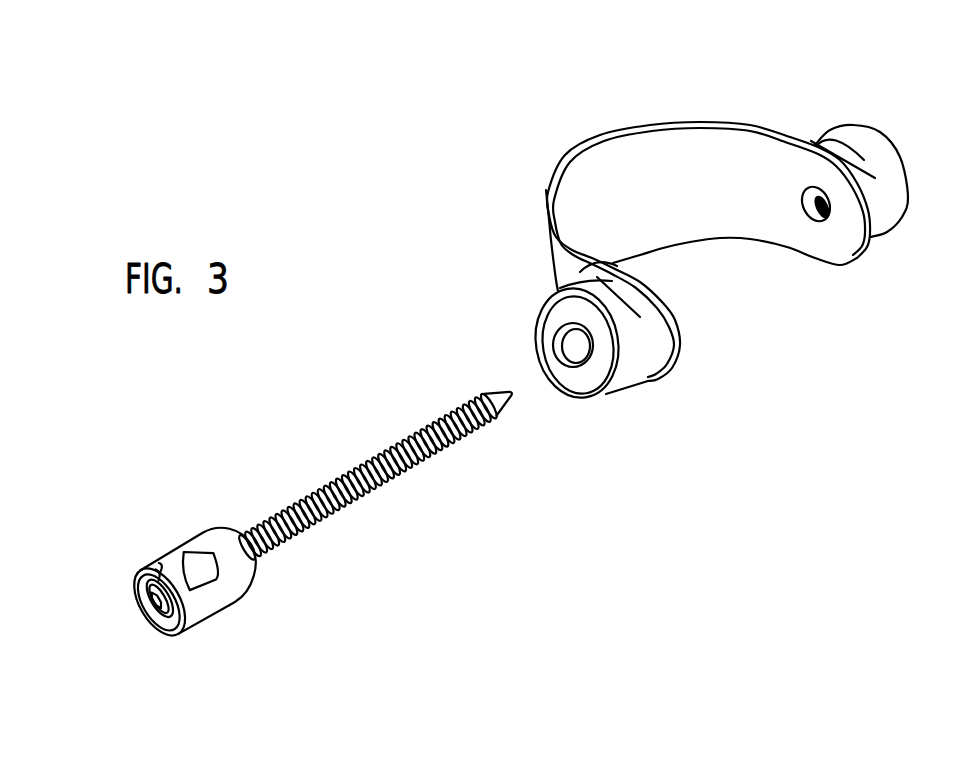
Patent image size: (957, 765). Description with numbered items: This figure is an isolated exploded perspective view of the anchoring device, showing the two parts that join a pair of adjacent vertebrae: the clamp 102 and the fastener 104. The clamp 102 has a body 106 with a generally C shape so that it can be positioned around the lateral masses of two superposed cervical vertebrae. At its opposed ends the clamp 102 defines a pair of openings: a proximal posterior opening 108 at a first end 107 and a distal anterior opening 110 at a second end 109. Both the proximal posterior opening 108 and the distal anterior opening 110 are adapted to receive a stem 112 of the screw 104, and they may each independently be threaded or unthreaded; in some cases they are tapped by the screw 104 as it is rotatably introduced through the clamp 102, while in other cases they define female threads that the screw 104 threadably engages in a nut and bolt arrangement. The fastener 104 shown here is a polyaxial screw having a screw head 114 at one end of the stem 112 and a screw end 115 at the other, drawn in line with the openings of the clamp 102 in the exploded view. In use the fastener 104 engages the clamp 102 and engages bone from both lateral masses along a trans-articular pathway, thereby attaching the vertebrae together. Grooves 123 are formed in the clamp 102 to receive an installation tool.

The clamp 102 is at (685, 262).
The fastener 104 is at (314, 500).
The body 106 is at (663, 125).
The first end 107 is at (609, 388).
The proximal posterior opening 108 is at (575, 348).
The second end 109 is at (890, 208).
The distal anterior opening 110 is at (803, 224).
The stem 112 is at (368, 476).
The screw head 114 is at (152, 617).
The screw end 115 is at (501, 399).
The grooves 123 is at (587, 267).